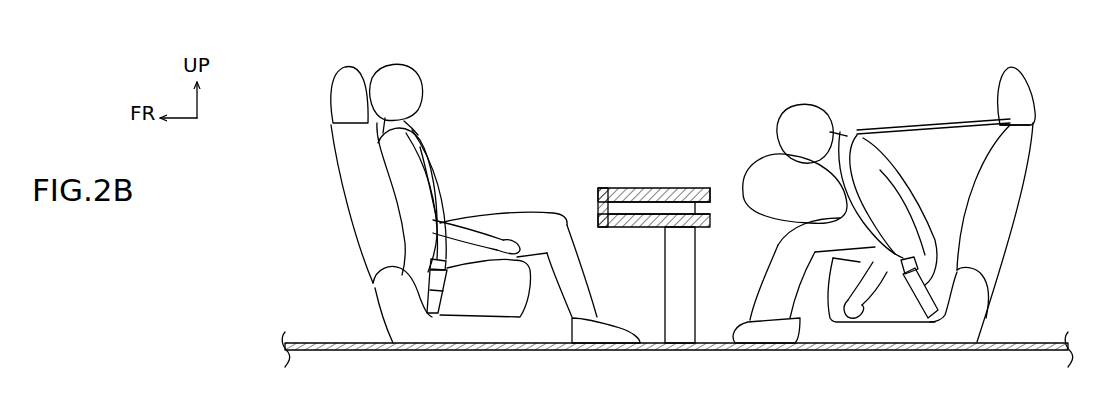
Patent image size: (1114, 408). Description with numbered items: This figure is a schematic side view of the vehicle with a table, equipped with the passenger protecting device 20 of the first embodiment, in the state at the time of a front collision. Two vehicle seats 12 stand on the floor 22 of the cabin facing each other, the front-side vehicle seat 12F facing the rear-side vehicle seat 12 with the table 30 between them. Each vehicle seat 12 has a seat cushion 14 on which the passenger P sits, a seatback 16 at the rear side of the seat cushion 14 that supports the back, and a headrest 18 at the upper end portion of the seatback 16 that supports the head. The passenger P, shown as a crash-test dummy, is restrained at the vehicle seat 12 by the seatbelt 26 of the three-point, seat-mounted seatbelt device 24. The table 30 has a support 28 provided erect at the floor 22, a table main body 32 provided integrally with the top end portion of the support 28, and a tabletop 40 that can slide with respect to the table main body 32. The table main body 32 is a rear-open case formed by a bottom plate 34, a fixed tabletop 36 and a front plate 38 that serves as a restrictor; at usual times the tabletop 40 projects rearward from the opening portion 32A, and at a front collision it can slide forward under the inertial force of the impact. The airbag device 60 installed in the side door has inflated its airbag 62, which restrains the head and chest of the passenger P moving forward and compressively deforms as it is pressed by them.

The vehicle seat 12 is at (1023, 62).
The front-side vehicle seat 12F is at (666, 205).
The seat cushion 14 is at (522, 290).
The seatback 16 is at (368, 212).
The headrest 18 is at (345, 88).
The passenger protecting device 20 is at (656, 207).
The floor 22 is at (1046, 341).
The seatbelt device 24 is at (444, 290).
The seatbelt 26 is at (443, 197).
The support 28 is at (664, 297).
The table 30 is at (656, 189).
The table main body 32 is at (622, 188).
The opening portion 32A is at (712, 203).
The bottom plate 34 is at (620, 230).
The fixed tabletop 36 is at (698, 206).
The front plate 38 is at (598, 205).
The tabletop 40 is at (668, 206).
The airbag device 60 is at (778, 221).
The airbag 62 is at (752, 220).
The passenger P is at (415, 67).